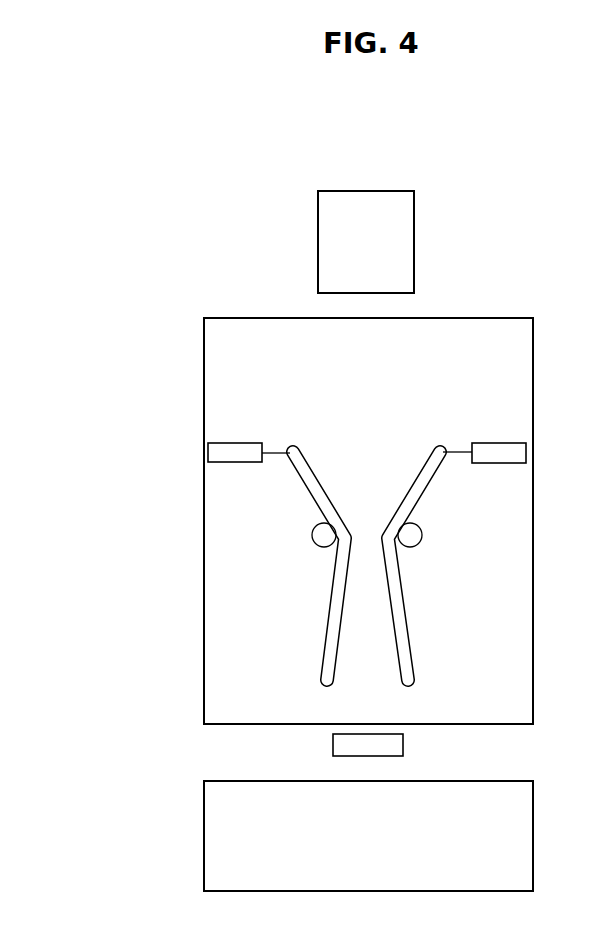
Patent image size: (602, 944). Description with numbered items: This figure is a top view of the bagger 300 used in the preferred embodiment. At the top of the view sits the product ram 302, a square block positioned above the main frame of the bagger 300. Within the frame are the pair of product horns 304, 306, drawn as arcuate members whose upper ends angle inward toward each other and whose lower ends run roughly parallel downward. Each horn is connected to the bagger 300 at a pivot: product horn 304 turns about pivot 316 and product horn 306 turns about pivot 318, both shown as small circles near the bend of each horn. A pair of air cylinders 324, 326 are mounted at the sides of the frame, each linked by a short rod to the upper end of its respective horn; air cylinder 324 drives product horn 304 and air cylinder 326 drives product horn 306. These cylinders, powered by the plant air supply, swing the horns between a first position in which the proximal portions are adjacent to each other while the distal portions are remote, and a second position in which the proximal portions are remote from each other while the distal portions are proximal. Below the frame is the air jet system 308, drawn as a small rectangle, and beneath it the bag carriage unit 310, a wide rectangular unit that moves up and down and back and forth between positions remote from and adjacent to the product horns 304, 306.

The bagger 300 is at (92, 502).
The product ram 302 is at (389, 245).
The product horn 304 is at (420, 476).
The product horn 306 is at (300, 462).
The air jet system 308 is at (340, 743).
The bag carriage unit 310 is at (235, 840).
The pivot 316 is at (411, 537).
The pivot 318 is at (324, 537).
The air cylinder 324 is at (511, 458).
The air cylinder 326 is at (222, 450).